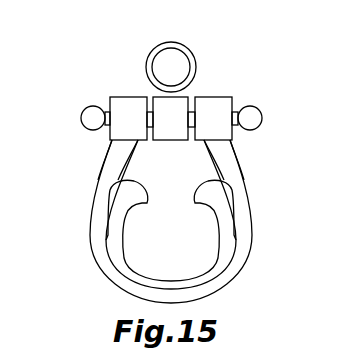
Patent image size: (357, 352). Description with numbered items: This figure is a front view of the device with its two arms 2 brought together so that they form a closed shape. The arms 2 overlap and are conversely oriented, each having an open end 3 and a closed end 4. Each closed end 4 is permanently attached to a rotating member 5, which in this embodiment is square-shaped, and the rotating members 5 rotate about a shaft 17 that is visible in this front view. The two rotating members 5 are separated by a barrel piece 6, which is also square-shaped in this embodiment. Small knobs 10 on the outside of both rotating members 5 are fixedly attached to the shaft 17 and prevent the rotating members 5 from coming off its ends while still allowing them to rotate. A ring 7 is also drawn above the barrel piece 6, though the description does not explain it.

The arm 2 is at (110, 273).
The open end 3 is at (142, 203).
The closed end 4 is at (128, 144).
The rotating member 5 is at (125, 100).
The barrel piece 6 is at (164, 128).
The ring 7 is at (172, 42).
The knob 10 is at (83, 118).
The shaft 17 is at (147, 96).